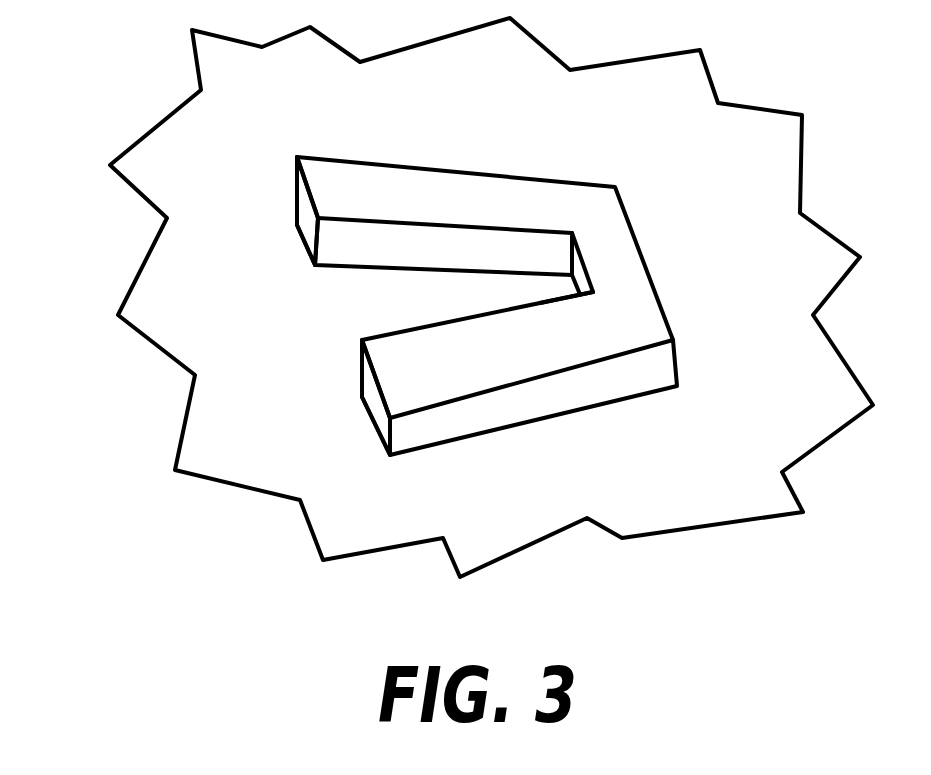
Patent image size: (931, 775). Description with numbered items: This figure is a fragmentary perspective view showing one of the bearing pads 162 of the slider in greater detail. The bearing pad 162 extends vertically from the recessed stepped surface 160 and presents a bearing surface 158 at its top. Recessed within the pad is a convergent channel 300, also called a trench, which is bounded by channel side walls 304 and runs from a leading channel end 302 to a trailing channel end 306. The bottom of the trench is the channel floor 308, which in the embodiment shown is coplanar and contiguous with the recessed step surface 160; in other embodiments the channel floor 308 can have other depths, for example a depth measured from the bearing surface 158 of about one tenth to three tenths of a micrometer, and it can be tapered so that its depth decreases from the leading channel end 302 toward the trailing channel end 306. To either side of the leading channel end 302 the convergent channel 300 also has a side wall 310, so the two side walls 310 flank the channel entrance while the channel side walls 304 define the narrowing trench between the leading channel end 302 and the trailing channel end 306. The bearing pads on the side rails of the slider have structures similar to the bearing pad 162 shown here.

The bearing surface 158 is at (645, 315).
The recessed stepped surface 160 is at (185, 283).
The bearing pad 162 is at (602, 168).
The convergent channel 300 is at (472, 275).
The leading channel end 302 is at (340, 297).
The channel side walls 304 is at (492, 222).
The trailing channel end 306 is at (582, 258).
The channel floor 308 is at (527, 289).
The side wall 310 is at (303, 228).